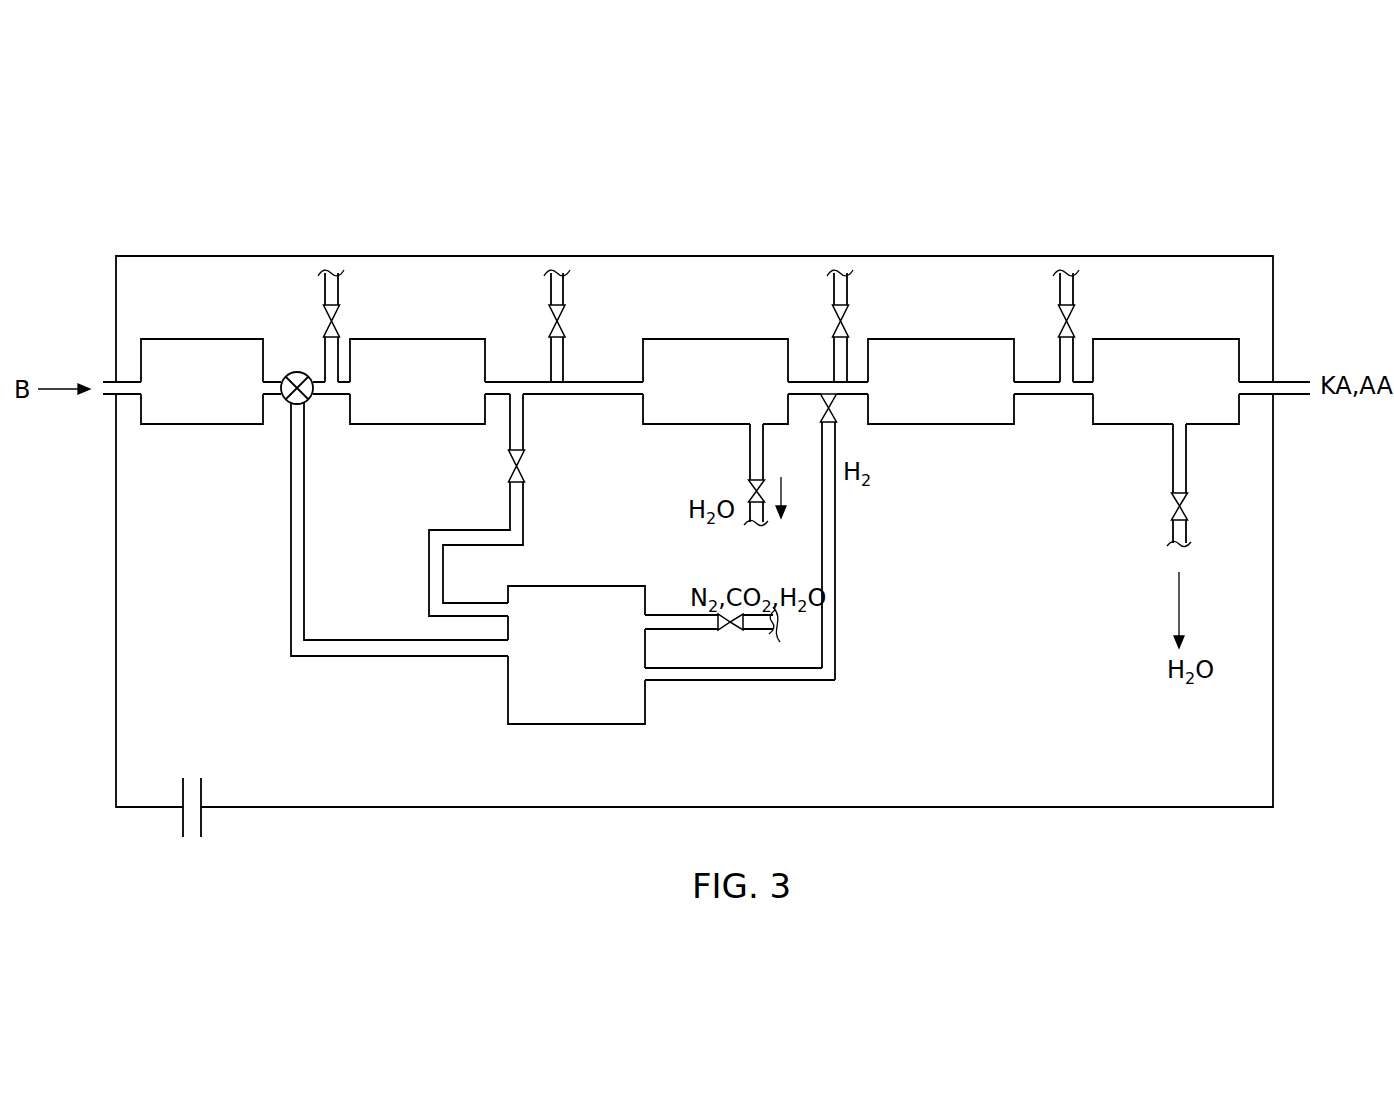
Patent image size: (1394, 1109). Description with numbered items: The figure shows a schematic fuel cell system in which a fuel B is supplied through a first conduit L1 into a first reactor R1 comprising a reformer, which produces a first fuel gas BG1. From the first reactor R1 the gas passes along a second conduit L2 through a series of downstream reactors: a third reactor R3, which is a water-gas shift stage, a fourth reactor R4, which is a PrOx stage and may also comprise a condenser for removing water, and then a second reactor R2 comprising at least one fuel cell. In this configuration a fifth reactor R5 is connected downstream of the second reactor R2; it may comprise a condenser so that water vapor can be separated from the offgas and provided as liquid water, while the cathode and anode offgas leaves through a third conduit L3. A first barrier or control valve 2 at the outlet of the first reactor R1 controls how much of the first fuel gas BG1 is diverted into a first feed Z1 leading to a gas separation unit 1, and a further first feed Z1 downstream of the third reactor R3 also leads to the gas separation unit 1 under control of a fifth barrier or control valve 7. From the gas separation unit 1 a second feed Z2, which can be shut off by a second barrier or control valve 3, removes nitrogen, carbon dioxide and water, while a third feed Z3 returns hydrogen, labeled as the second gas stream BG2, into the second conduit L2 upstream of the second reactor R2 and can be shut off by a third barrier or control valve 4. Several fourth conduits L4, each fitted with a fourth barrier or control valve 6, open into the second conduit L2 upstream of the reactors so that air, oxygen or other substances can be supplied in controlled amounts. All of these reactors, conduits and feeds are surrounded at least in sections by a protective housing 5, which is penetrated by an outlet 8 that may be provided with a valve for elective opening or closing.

The gas separation unit 1 is at (576, 655).
The first barrier or control valve 2 is at (300, 371).
The second barrier or control valve 3 is at (730, 622).
The third barrier or control valve 4 is at (832, 408).
The protective housing 5 is at (1275, 620).
The fourth barrier or control valve 6 is at (552, 312).
The fifth barrier or control valve 7 is at (515, 462).
The outlet 8 is at (203, 793).
The first reactor R1 is at (185, 355).
The second reactor R2 is at (988, 353).
The third reactor R3 is at (447, 353).
The fourth reactor R4 is at (717, 353).
The fifth reactor R5 is at (1222, 353).
The first conduit L1 is at (133, 398).
The second conduit L2 is at (628, 373).
The third conduit L3 is at (1298, 380).
The fourth conduit L4 is at (335, 343).
The first feed Z1 is at (520, 517).
The second feed Z2 is at (693, 615).
The third feed Z3 is at (753, 682).
The first fuel gas BG1 is at (338, 397).
The branch line BG2 is at (835, 587).